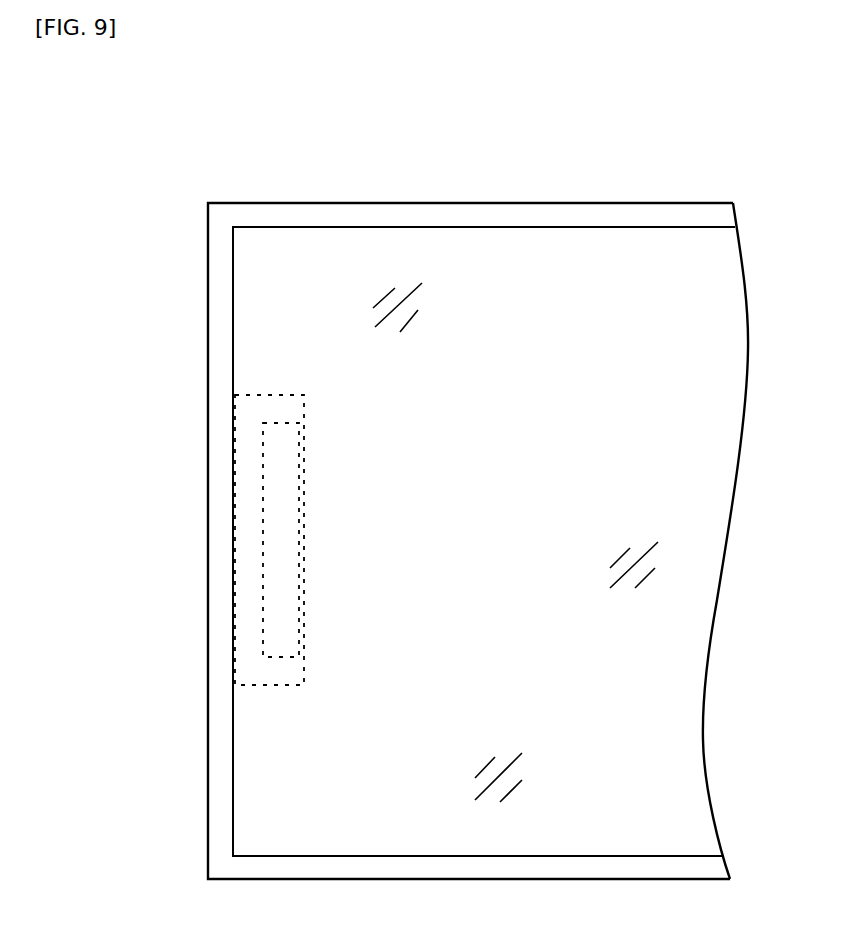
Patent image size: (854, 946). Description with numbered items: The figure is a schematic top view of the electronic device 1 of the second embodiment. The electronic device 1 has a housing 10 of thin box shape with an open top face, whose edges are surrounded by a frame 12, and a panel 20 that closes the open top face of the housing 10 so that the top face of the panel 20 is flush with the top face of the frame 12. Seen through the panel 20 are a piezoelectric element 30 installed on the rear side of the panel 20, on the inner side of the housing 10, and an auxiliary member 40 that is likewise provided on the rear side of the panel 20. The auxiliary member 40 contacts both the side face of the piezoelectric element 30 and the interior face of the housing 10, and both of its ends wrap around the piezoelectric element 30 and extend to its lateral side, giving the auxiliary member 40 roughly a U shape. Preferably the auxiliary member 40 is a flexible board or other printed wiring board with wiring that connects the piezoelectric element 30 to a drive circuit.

The electronic device 1 is at (383, 153).
The housing 10 is at (269, 213).
The frame 12 is at (308, 213).
The panel 20 is at (595, 251).
The piezoelectric element 30 is at (295, 552).
The auxiliary member 40 is at (242, 512).